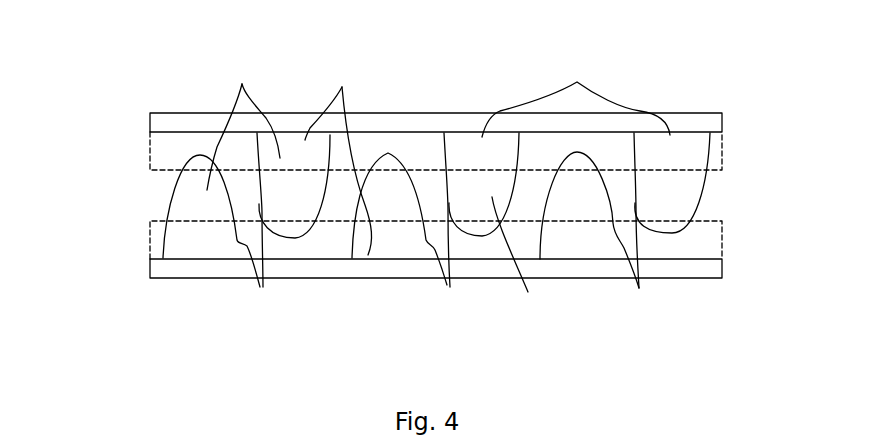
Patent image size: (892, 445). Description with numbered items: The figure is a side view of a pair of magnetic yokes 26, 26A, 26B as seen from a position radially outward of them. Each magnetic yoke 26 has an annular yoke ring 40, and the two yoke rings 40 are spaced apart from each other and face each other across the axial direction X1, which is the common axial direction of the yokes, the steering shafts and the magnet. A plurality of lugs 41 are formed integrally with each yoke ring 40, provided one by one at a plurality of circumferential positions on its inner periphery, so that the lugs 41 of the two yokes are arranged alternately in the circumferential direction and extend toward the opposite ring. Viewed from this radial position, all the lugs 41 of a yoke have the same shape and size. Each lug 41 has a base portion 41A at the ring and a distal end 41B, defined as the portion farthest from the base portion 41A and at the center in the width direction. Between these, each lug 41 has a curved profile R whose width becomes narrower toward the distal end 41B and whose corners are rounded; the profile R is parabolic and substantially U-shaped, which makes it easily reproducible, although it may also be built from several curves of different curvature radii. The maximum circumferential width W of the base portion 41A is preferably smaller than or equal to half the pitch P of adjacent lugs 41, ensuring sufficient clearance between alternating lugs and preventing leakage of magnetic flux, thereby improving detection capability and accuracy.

The magnetic yoke 26 is at (453, 194).
The upper support rod 26A is at (668, 112).
The lower support rod 26B is at (673, 279).
The yoke ring 40 is at (150, 124).
The lug 41 is at (565, 242).
The base portion 41A is at (487, 158).
The distal end 41B is at (388, 152).
The axial direction X1 is at (369, 2).
The pitch P is at (444, 32).
The maximum circumferential width W is at (520, 133).
The profile R is at (449, 304).